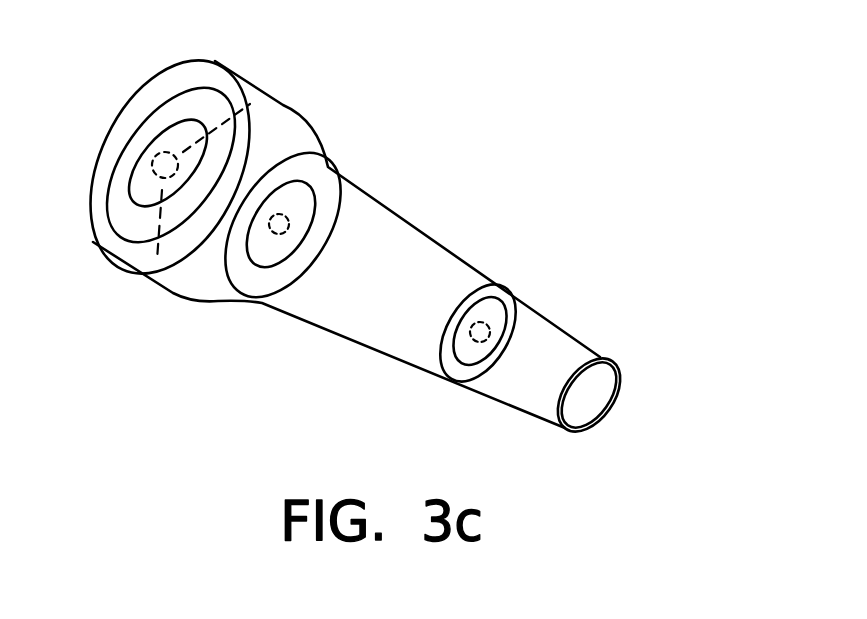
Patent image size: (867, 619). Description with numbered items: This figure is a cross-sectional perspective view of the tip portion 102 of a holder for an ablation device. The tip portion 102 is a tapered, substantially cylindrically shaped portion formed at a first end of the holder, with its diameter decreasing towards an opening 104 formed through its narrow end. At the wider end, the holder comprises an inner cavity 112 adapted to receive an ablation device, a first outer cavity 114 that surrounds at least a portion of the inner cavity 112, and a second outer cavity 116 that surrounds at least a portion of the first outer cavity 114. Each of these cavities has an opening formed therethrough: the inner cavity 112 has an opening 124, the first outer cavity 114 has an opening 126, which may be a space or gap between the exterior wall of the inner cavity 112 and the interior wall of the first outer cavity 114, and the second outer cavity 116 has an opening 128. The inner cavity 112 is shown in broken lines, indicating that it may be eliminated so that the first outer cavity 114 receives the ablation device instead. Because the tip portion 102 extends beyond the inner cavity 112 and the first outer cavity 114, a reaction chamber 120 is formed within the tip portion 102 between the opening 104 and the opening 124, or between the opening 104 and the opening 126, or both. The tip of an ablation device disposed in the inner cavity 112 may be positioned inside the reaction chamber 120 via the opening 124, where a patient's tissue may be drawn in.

The tip portion 102 is at (447, 247).
The opening 104 is at (597, 396).
The inner cavity 112 is at (158, 162).
The first outer cavity 114 is at (140, 187).
The second outer cavity 116 is at (207, 107).
The reaction chamber 120 is at (558, 373).
The opening 124 is at (487, 317).
The opening 126 is at (497, 327).
The opening 128 is at (463, 370).